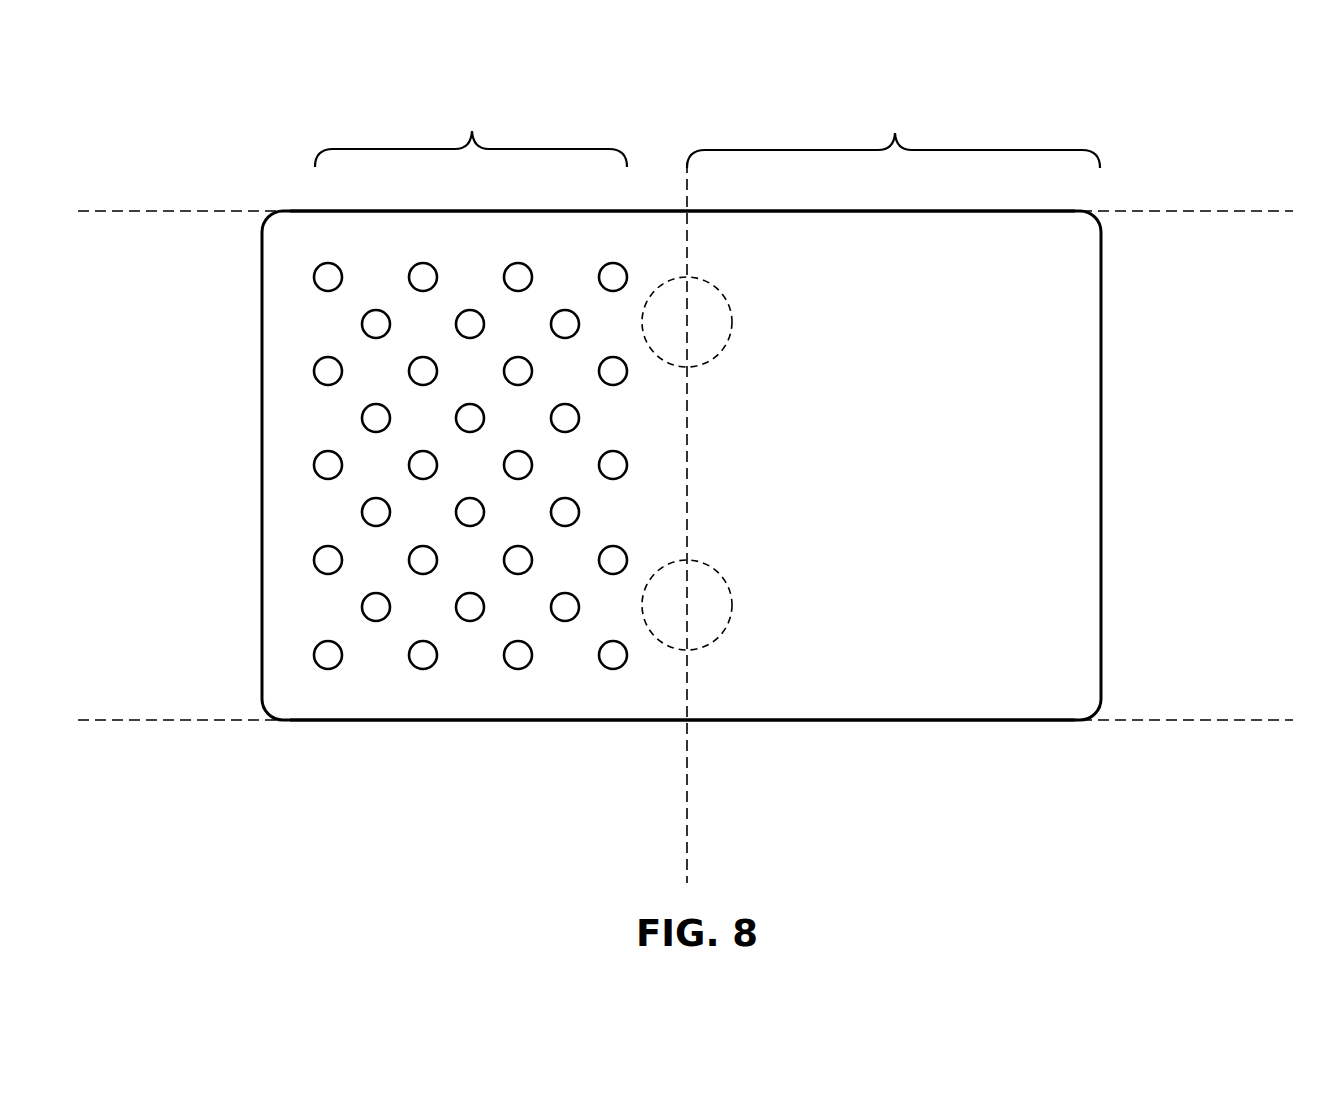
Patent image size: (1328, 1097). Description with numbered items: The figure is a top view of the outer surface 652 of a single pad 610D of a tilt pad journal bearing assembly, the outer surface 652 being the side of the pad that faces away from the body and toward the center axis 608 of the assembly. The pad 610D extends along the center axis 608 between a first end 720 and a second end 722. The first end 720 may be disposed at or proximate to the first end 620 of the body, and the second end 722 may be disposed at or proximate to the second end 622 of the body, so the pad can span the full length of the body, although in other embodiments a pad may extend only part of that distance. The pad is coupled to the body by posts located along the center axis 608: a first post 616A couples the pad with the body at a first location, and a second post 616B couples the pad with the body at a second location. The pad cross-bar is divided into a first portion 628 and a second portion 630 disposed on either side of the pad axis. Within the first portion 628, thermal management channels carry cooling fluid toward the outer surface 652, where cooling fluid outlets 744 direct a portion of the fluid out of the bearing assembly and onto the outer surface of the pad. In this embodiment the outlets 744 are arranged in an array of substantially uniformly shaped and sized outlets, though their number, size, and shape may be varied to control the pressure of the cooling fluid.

The pad 610D is at (1190, 98).
The first portion 628 is at (471, 132).
The second portion 630 is at (893, 132).
The second end 722 is at (1003, 211).
The second end 622 is at (1205, 211).
The cooling fluid outlet 744 is at (328, 277).
The second post 616B is at (733, 320).
The outer surface 652 is at (1077, 363).
The first post 616A is at (733, 605).
The first end 620 is at (1204, 720).
The first end 720 is at (1032, 721).
The center axis 608 is at (687, 798).